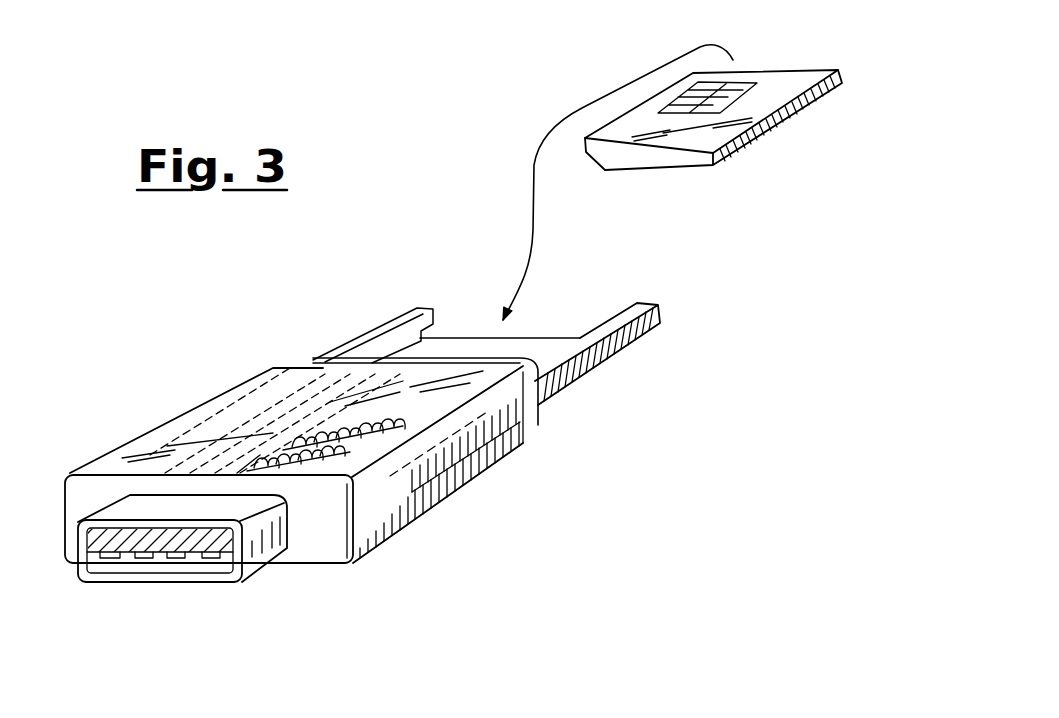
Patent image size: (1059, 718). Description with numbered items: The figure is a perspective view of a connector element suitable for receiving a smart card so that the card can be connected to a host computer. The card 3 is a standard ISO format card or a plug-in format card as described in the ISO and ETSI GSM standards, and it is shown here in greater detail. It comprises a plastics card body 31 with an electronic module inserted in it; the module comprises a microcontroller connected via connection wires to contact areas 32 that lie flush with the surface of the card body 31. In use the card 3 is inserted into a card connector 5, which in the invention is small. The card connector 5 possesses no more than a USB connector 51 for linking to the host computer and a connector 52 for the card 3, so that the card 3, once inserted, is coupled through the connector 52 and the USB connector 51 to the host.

The card 3 is at (620, 67).
The card body 31 is at (628, 147).
The contact areas 32 is at (737, 80).
The card connector 5 is at (152, 417).
The USB connector 51 is at (157, 560).
The connector 52 is at (325, 433).